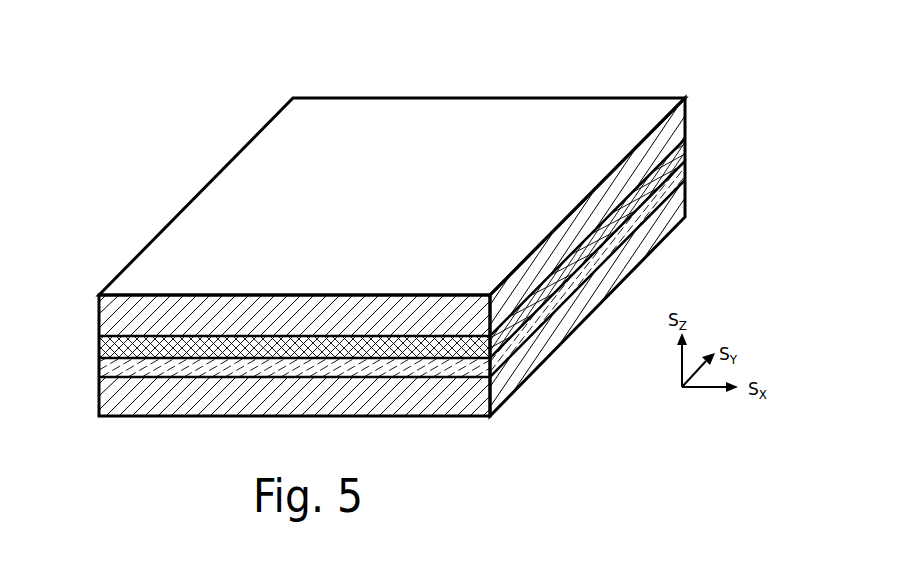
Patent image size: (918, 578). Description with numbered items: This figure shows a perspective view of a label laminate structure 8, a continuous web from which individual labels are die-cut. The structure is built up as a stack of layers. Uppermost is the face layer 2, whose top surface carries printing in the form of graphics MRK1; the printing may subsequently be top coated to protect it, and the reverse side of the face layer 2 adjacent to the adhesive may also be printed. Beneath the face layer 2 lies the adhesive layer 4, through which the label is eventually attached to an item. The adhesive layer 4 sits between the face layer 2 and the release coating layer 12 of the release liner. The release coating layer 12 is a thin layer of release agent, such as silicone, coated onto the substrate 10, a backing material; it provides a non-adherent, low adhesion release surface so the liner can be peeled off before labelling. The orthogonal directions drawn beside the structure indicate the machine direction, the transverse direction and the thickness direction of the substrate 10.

The label laminate structure 8 is at (454, 78).
The face layer 2 is at (99, 313).
The adhesive layer 4 is at (99, 343).
The release coating layer 12 is at (99, 365).
The substrate 10 is at (99, 398).
The graphics MRK1 is at (290, 188).